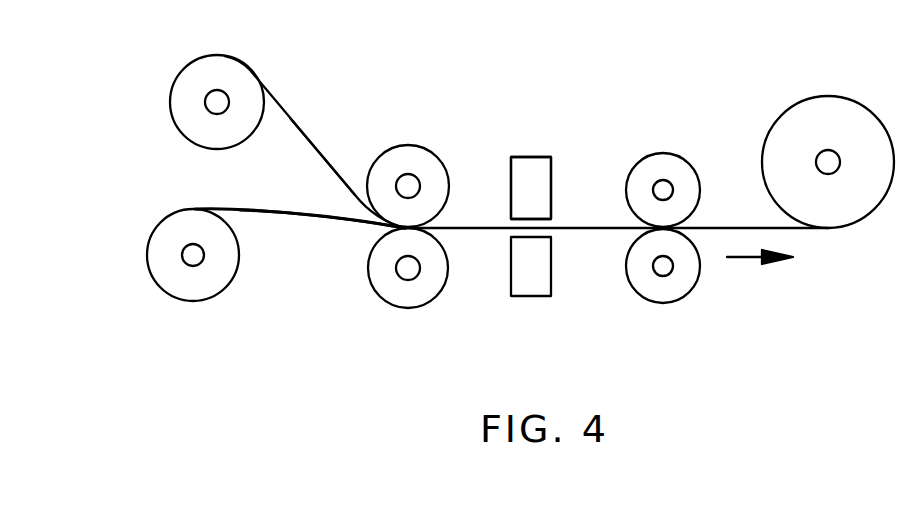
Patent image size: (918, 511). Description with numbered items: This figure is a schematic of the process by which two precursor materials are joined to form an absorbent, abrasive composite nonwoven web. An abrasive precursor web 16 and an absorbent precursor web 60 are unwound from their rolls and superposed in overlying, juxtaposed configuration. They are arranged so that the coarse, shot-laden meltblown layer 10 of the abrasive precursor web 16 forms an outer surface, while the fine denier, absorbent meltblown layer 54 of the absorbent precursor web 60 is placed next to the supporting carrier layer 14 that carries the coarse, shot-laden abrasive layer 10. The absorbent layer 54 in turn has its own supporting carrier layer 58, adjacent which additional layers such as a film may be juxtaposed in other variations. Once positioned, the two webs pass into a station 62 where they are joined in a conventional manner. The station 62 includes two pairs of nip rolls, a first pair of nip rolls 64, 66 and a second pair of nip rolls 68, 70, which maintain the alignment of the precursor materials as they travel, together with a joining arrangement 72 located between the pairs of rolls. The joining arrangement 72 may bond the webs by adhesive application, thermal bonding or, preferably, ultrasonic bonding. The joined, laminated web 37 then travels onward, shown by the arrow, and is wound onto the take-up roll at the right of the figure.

The coarse, shot-laden meltblown layer 10 is at (306, 134).
The supporting carrier layer 14 is at (316, 148).
The abrasive precursor web 16 is at (266, 84).
The laminated web 37 is at (586, 227).
The fine denier, absorbent meltblown layer 54 is at (323, 222).
The supporting carrier layer 58 is at (287, 230).
The absorbent precursor web 60 is at (213, 207).
The station 62 is at (542, 138).
The nip roll 64 is at (442, 171).
The nip roll 66 is at (442, 291).
The upper pull roller 68 is at (670, 153).
The nip roll 70 is at (690, 293).
The joining arrangement 72 is at (551, 183).